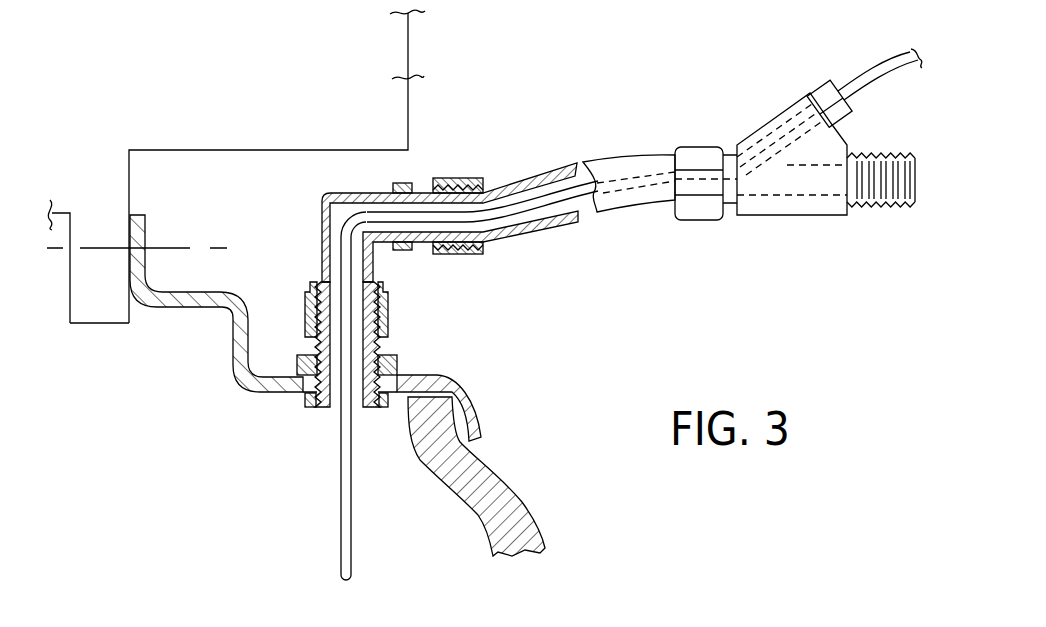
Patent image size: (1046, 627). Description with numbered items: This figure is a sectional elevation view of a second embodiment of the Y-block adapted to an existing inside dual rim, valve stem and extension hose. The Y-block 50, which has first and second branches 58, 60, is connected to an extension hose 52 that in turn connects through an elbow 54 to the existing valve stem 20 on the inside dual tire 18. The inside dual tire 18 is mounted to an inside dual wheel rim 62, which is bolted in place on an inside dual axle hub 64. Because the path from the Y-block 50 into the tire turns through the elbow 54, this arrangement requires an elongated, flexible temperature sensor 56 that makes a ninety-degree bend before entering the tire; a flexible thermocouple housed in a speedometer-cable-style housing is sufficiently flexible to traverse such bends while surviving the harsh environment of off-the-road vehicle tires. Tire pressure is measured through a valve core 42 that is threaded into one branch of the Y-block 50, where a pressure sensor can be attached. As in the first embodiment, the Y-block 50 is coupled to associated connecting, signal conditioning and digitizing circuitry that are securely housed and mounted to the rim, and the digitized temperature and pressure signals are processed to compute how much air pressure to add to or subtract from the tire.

The inside dual tire 18 is at (518, 507).
The valve stem 20 is at (395, 362).
The valve core 42 is at (893, 208).
The Y-block 50 is at (802, 162).
The extension hose 52 is at (537, 183).
The elbow 54 is at (320, 212).
The flexible temperature sensor 56 is at (342, 522).
The first branch 58 is at (793, 103).
The second branch 60 is at (806, 216).
The inside dual wheel rim 62 is at (267, 394).
The inside dual axle hub 64 is at (410, 77).